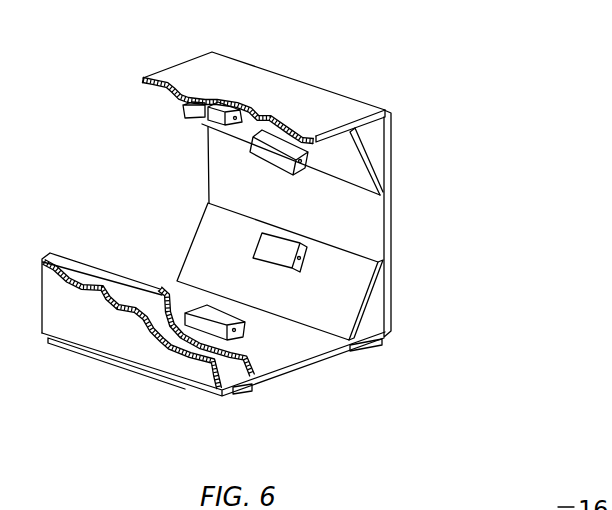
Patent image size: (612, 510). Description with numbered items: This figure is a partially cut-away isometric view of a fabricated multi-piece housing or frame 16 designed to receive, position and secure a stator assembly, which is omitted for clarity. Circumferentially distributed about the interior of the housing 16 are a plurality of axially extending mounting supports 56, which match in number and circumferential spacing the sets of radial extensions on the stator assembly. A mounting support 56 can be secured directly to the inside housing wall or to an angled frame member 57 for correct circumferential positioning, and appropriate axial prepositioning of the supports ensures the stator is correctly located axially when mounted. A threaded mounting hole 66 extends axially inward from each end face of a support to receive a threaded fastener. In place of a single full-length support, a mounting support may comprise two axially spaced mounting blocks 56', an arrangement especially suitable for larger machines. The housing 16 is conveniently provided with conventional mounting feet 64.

The housing or frame 16 is at (390, 128).
The axially spaced mounting blocks 56' is at (175, 66).
The mounting support 56 is at (169, 268).
The angled frame member 57 is at (363, 275).
The mounting feet 64 is at (233, 396).
The threaded mounting hole 66 is at (300, 257).